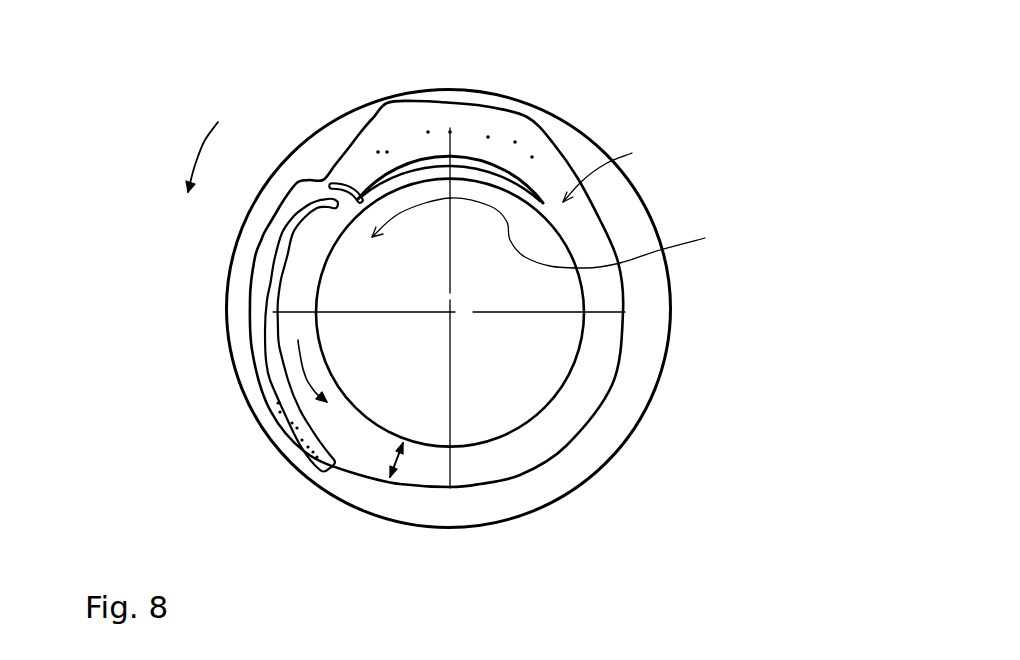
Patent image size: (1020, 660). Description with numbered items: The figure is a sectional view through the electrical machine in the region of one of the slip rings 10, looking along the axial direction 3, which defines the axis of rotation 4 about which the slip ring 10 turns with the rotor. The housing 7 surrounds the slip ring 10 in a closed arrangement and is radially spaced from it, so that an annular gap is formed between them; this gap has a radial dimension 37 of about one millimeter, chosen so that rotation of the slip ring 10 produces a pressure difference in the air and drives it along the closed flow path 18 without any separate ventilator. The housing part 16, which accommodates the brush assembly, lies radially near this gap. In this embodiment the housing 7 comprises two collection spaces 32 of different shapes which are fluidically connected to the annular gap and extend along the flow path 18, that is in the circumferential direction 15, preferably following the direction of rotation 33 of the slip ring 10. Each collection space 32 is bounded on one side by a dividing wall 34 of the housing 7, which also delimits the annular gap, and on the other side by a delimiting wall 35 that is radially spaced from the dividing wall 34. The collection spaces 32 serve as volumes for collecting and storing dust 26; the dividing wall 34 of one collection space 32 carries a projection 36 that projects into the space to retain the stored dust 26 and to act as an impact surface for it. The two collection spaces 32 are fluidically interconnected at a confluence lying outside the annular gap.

The axial direction 3 is at (522, 308).
The axis of rotation 4 is at (452, 314).
The housing 7 is at (392, 540).
The slip ring 10 is at (533, 392).
The circumferential direction 15 is at (195, 146).
The housing part 16 is at (508, 463).
The flow path 18 is at (305, 375).
The dust 26 is at (517, 143).
The collection space 32 is at (257, 297).
The direction of rotation 33 is at (584, 243).
The dividing wall 34 is at (417, 167).
The delimiting wall 35 is at (413, 97).
The projection 36 is at (345, 184).
The radial dimension 37 is at (393, 461).